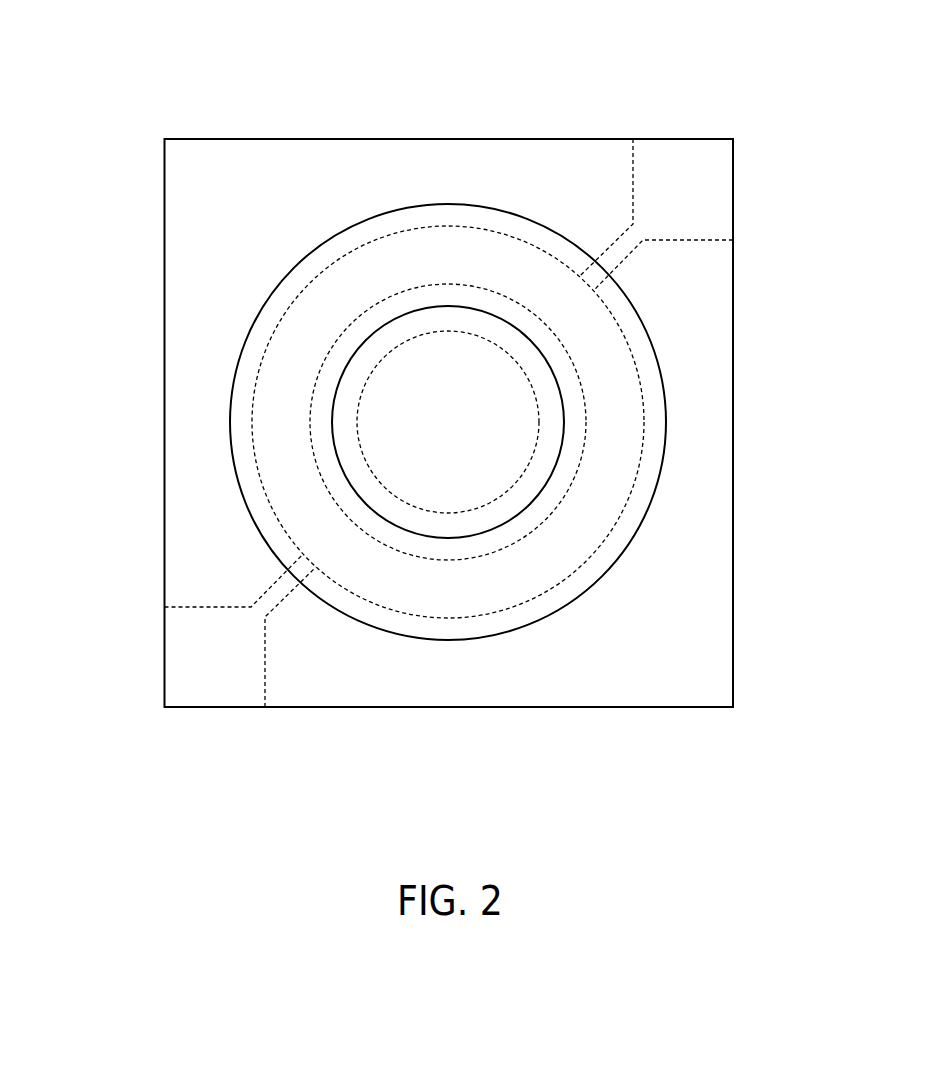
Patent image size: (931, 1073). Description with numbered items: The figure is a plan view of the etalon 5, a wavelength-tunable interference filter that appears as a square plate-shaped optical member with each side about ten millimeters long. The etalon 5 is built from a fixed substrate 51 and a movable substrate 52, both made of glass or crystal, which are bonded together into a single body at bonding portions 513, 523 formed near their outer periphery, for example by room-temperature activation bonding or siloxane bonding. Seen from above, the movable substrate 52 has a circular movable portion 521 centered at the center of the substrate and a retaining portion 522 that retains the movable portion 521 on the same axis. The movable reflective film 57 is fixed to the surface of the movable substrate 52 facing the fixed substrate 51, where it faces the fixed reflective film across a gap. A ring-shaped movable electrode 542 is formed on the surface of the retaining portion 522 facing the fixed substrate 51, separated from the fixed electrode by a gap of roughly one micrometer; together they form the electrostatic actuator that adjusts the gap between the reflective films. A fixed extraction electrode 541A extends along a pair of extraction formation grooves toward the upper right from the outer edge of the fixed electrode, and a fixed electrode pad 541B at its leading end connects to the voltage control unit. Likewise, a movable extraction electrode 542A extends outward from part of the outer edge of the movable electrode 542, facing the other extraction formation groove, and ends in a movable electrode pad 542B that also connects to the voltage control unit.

The etalon 5 is at (176, 82).
The fixed substrate 51 is at (265, 138).
The movable substrate 52 is at (383, 423).
The bonding portion 513 is at (178, 352).
The bonding portion 523 is at (449, 423).
The retaining portion 522 is at (657, 400).
The movable portion 521 is at (553, 438).
The movable reflective film 57 is at (466, 344).
The fixed extraction electrode 541A is at (632, 253).
The fixed electrode pad 541B is at (697, 142).
The movable electrode 542 is at (408, 593).
The movable extraction electrode 542A is at (281, 592).
The movable electrode pad 542B is at (215, 688).